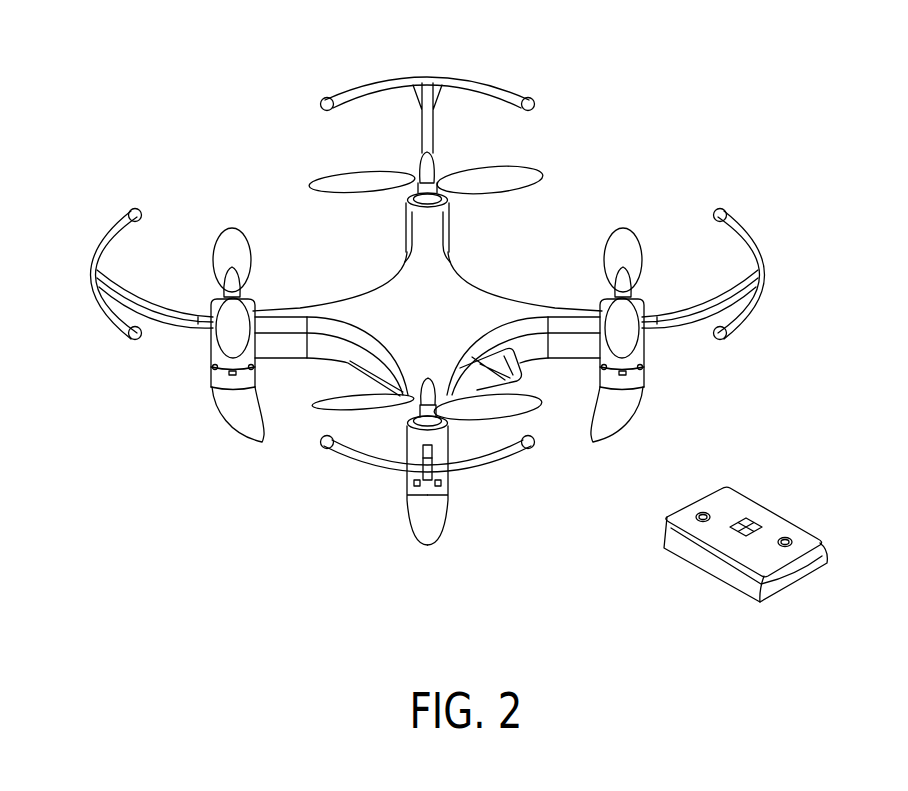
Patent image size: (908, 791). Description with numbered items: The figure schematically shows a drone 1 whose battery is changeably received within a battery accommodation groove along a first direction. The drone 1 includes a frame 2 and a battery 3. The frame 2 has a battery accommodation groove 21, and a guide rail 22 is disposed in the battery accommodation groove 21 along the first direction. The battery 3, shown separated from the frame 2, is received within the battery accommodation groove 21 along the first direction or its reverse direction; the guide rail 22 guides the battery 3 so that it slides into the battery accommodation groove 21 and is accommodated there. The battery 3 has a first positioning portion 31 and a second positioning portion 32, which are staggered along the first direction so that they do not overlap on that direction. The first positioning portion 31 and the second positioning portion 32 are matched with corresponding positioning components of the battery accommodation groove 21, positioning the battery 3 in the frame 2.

The drone 1 is at (867, 93).
The frame 2 is at (487, 307).
The battery accommodation groove 21 is at (473, 389).
The guide rail 22 is at (504, 360).
The battery 3 is at (779, 529).
The first positioning portion 31 is at (702, 523).
The second positioning portion 32 is at (787, 549).